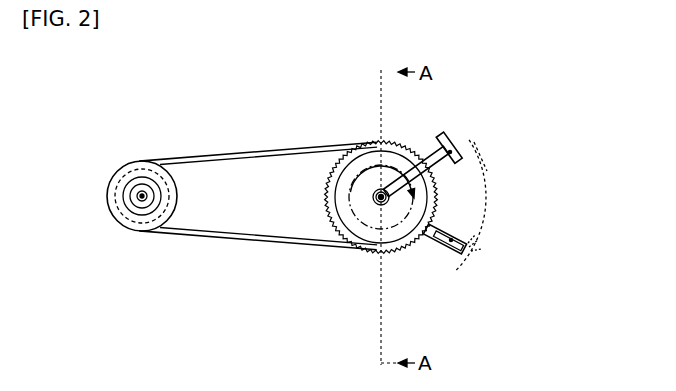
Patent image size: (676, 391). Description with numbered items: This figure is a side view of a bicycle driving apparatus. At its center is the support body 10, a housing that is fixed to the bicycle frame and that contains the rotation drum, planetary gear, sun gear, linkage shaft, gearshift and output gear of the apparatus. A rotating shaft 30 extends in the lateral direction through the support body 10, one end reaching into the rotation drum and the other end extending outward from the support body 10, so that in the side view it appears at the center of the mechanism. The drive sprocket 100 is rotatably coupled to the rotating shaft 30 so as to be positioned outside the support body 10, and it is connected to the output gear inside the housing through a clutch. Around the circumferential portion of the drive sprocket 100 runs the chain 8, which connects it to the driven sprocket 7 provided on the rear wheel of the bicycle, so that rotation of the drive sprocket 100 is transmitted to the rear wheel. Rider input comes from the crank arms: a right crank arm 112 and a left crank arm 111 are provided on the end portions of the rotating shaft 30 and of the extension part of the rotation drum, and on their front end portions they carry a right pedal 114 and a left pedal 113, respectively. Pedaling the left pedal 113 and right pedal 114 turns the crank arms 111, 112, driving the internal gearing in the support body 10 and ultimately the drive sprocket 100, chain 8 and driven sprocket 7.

The drive sprocket 100 is at (317, 180).
The driven sprocket 7 is at (105, 213).
The chain 8 is at (248, 245).
The support body 10 is at (328, 250).
The rotating shaft 30 is at (405, 215).
The right crank arm 112 is at (443, 172).
The right pedal 114 is at (451, 152).
The left crank arm 111 is at (440, 213).
The left pedal 113 is at (455, 270).